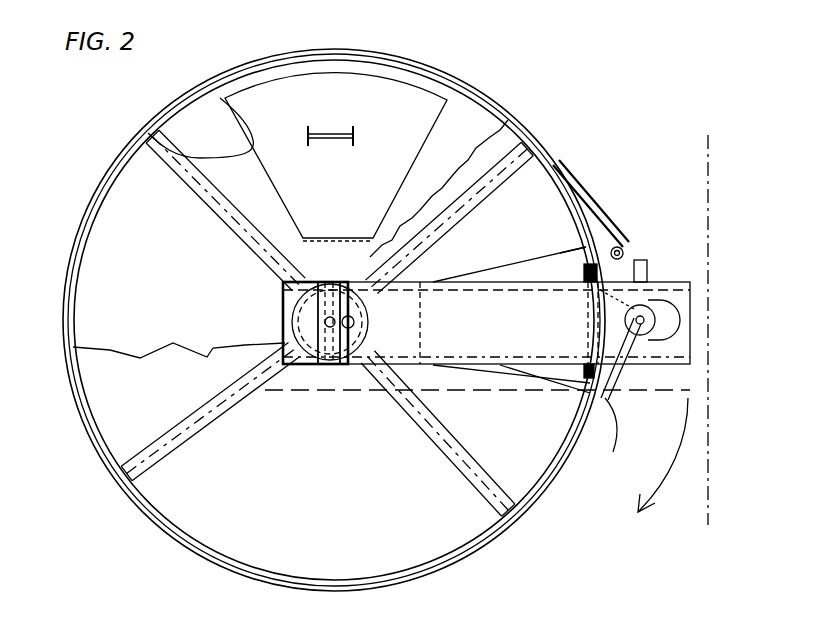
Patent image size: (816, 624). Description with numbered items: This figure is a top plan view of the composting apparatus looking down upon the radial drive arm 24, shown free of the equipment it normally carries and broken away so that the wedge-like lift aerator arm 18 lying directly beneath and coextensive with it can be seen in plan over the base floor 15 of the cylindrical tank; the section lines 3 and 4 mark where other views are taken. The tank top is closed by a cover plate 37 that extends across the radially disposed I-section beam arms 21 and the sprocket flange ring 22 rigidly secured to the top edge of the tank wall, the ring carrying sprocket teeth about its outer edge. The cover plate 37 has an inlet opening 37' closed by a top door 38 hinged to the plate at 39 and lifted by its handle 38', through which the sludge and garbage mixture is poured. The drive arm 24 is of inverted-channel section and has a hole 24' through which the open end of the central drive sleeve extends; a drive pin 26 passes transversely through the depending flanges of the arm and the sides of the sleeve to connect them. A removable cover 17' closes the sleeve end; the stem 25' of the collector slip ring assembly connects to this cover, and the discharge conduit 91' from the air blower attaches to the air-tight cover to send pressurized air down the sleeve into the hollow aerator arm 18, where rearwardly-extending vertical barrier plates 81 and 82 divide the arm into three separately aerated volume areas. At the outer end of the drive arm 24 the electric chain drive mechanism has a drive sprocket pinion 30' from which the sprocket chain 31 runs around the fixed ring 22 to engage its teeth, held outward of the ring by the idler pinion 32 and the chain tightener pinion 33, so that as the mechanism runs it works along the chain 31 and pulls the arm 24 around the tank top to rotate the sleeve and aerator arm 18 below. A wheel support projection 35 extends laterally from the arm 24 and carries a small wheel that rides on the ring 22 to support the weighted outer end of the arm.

The base floor 15 is at (143, 406).
The removable cover 17' is at (305, 323).
The wedge-like lift aerator arm 18 is at (535, 392).
The I-section beam arms 21 is at (460, 475).
The sprocket flange ring 22 is at (166, 530).
The drive arm 24 is at (486, 321).
The hole 24' is at (301, 351).
The stem 25' is at (258, 283).
The drive pin 26 is at (327, 366).
The drive sprocket pinion 30' is at (646, 313).
The sprocket chain 31 is at (608, 435).
The sprocket guide or idler pinion 32 is at (629, 257).
The chain tightener sprocket pinion 33 is at (610, 268).
The wheel support projection 35 is at (621, 242).
The cover plate 37 is at (187, 210).
The inlet opening 37' is at (179, 123).
The top door 38 is at (336, 155).
The handle 38' is at (363, 78).
The hinge 39 is at (338, 240).
The vertical barrier plate 81 is at (477, 270).
The vertical barrier plate 82 is at (553, 252).
The discharge conduit 91' is at (449, 217).
The section line 3- 3 is at (263, 393).
The section line 4- 4 is at (712, 137).